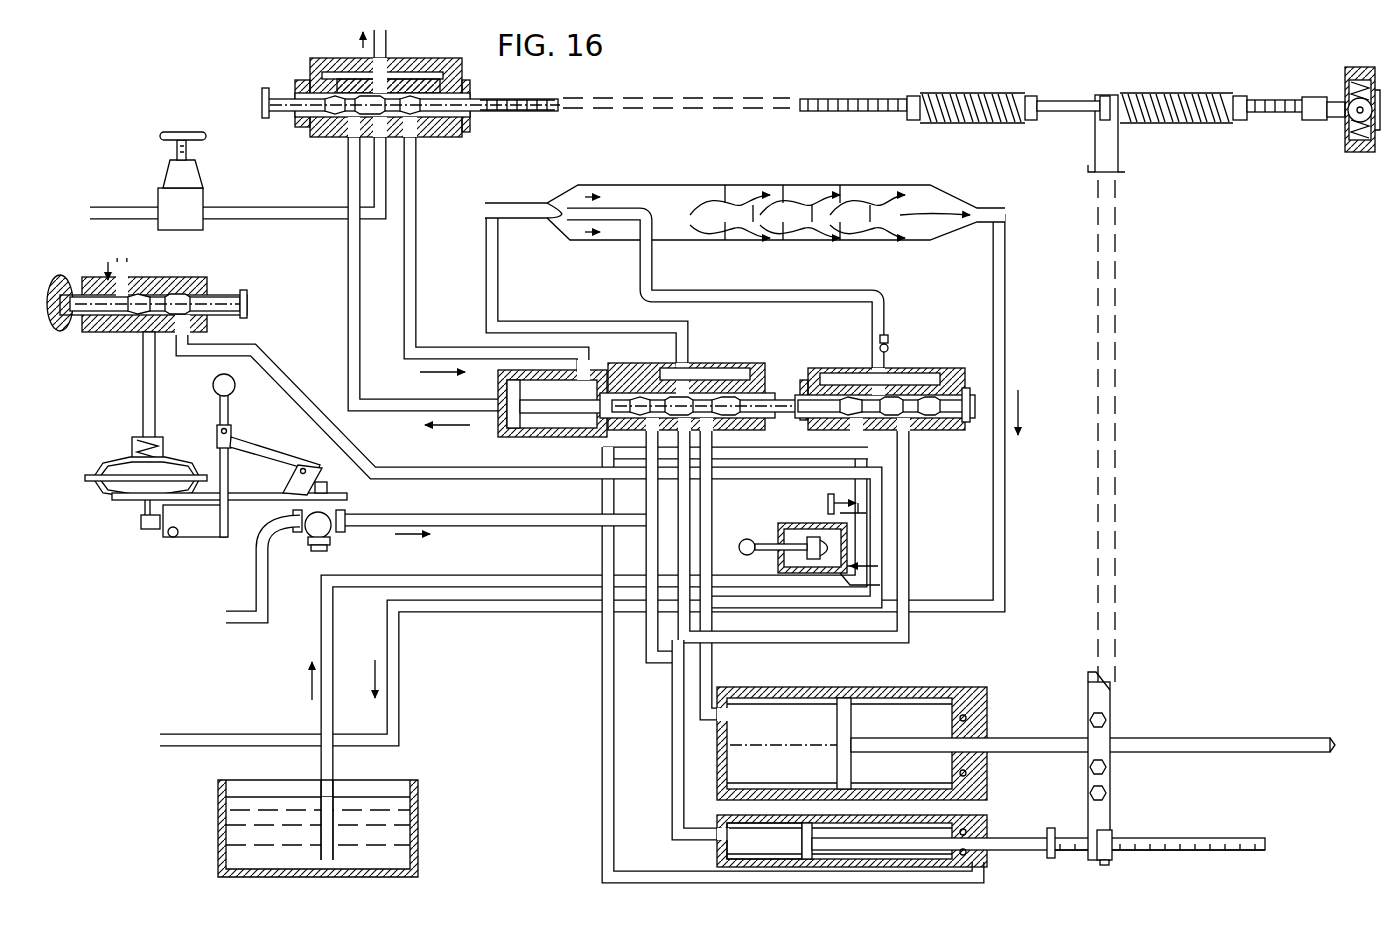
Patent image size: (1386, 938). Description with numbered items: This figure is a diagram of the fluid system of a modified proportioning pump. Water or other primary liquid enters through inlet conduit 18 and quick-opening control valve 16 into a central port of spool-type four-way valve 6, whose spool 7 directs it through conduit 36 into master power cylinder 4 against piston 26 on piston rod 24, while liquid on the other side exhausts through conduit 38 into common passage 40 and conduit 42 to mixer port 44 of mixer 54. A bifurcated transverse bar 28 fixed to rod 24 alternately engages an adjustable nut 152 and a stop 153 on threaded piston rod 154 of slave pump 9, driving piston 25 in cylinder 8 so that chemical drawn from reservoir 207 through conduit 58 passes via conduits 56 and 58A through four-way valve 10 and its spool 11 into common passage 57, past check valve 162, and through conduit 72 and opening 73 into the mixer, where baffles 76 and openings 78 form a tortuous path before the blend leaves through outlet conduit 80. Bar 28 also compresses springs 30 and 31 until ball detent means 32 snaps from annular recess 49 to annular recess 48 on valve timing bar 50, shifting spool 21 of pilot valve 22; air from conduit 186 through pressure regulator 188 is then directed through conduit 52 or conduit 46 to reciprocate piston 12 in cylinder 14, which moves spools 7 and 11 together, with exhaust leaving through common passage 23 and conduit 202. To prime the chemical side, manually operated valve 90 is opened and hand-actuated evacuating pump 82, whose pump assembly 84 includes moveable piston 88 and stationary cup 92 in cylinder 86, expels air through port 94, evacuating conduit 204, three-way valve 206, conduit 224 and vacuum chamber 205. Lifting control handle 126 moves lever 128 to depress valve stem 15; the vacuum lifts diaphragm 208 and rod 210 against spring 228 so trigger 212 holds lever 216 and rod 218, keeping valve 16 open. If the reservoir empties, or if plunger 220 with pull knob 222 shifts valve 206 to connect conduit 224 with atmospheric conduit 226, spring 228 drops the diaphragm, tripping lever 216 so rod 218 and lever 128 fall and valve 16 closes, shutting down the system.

The master power cylinder 4 is at (1026, 731).
The four-way valve 6 is at (701, 371).
The spool 7 is at (658, 397).
The cylinder 8 is at (717, 850).
The slave pump 9 is at (954, 828).
The four-way valve 10 is at (885, 346).
The spool 11 is at (930, 397).
The piston 12 is at (510, 415).
The cylinder 14 is at (516, 412).
The valve stem 15 is at (333, 480).
The control valve 16 is at (340, 535).
The inlet conduit 18 is at (245, 620).
The spool 21 is at (280, 110).
The pilot valve 22 is at (396, 85).
The common passage 23 is at (345, 72).
The piston rod 24 is at (1160, 738).
The piston 25 is at (802, 842).
The piston 26 is at (837, 712).
The transverse bar 28 is at (1134, 480).
The spring 30 is at (1142, 92).
The spring 31 is at (948, 92).
The ball detent means 32 is at (1345, 150).
The conduit 36 is at (710, 450).
The conduit 38 is at (640, 655).
The common passage 40 is at (700, 368).
The conduit 42 is at (505, 310).
The mixer port 44 is at (520, 200).
The conduit 46 is at (348, 175).
The annular recess 48 is at (1311, 107).
The annular recess 49 is at (1340, 120).
The valve timing bar 50 is at (1066, 100).
The conduit 52 is at (415, 315).
The mixer 54 is at (745, 254).
The conduit 56 is at (980, 876).
The common passage 57 is at (870, 373).
The conduit 58 is at (323, 730).
The conduit 58A is at (672, 745).
The conduit 72 is at (640, 262).
The opening 73 is at (640, 205).
The baffles 76 is at (735, 195).
The openings 78 is at (820, 195).
The outlet conduit 80 is at (1005, 350).
The hand-actuated evacuating pump 82 is at (880, 566).
The hand pump 84 is at (837, 537).
The cylinder 86 is at (790, 527).
The moveable piston 88 is at (830, 523).
The manually operated valve 90 is at (868, 513).
The stationary cup 92 is at (882, 585).
The port 94 is at (778, 553).
The control handle 126 is at (218, 390).
The lever 128 is at (272, 455).
The nut 152 is at (1112, 835).
The stop 153 is at (1045, 835).
The threaded piston rod 154 is at (1145, 851).
The check valve 162 is at (892, 335).
The conduit 186 is at (100, 207).
The pressure regulator 188 is at (165, 175).
The conduit 202 is at (395, 40).
The conduit 204 is at (262, 358).
The vacuum chamber 205 is at (141, 501).
The three-way valve 206 is at (172, 330).
The reservoir 207 is at (420, 795).
The diaphragm 208 is at (118, 498).
The rod 210 is at (148, 510).
The trigger 212 is at (155, 530).
The lever 216 is at (190, 535).
The rod 218 is at (227, 455).
The plunger 220 is at (125, 312).
The pull knob 222 is at (60, 332).
The conduit 224 is at (145, 430).
The conduit 226 is at (128, 270).
The spring 228 is at (165, 445).